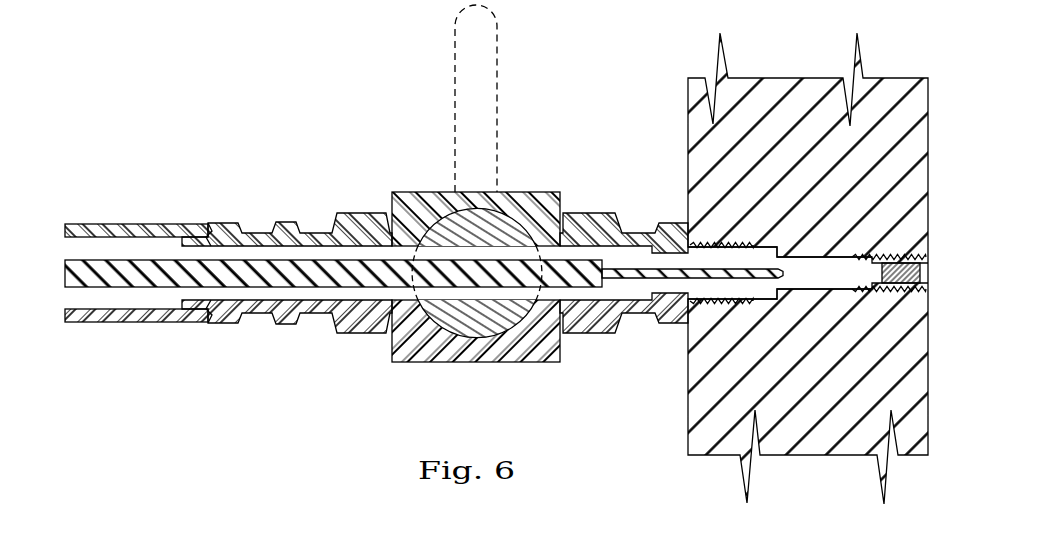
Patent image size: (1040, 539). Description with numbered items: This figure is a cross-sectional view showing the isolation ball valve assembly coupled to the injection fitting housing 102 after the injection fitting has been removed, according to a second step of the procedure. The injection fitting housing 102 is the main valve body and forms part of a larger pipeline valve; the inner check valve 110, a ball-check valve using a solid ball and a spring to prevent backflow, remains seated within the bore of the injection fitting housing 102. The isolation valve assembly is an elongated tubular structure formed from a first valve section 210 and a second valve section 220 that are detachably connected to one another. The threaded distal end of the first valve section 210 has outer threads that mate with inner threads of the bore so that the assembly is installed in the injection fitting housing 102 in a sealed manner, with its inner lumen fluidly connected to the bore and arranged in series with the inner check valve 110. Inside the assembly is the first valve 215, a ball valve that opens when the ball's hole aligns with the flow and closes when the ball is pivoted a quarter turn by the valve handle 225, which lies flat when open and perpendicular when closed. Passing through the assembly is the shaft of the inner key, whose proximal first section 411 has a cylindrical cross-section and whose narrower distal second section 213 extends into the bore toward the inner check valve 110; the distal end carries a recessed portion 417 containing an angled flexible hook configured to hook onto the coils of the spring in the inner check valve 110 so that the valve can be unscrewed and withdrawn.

The injection fitting housing 102 is at (915, 140).
The inner check valve 110 is at (927, 262).
The first valve section 210 is at (398, 349).
The actuator pin 213 is at (628, 268).
The first valve 215 is at (443, 228).
The second valve section 220 is at (118, 322).
The valve handle 225 is at (497, 43).
The first section 411 is at (268, 258).
The recessed portion 417 is at (773, 273).